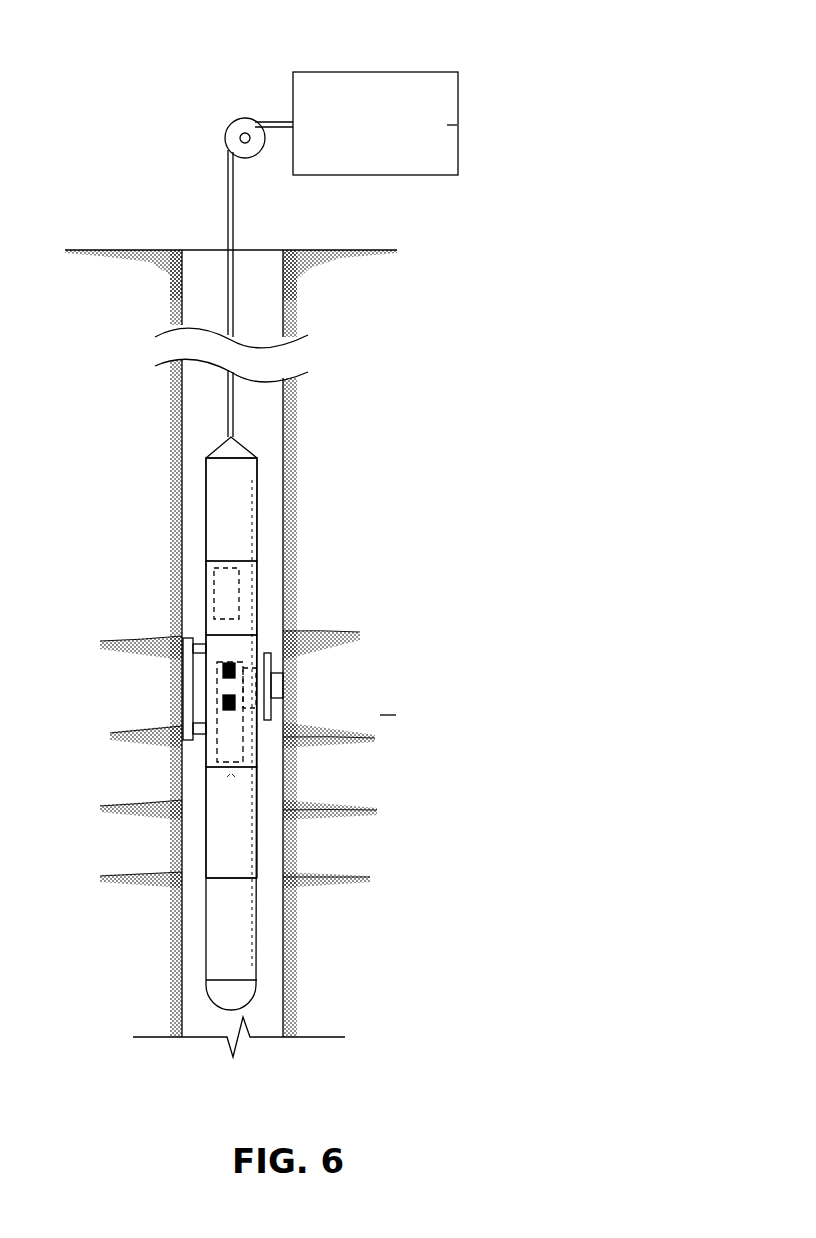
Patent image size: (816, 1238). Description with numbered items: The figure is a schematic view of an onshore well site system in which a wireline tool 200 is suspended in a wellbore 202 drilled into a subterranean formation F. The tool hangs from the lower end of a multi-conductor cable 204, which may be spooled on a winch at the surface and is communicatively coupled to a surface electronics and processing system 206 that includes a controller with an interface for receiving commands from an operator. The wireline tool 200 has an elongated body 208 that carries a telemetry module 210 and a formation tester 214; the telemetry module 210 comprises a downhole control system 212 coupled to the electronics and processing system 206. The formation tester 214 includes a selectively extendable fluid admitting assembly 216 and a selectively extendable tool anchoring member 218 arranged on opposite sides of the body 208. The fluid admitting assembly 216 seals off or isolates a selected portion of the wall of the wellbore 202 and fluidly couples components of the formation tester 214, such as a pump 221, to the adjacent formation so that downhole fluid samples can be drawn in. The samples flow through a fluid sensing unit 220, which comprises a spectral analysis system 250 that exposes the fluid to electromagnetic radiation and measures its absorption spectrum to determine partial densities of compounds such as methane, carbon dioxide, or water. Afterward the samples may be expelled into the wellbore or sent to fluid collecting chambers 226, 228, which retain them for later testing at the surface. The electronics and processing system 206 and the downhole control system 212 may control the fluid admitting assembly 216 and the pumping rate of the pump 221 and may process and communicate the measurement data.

The wireline tool 200 is at (378, 603).
The wellbore 202 is at (283, 441).
The multi-conductor cable 204 is at (228, 275).
The electronics and processing system 206 is at (438, 72).
The elongated body 208 is at (228, 497).
The telemetry module 210 is at (252, 612).
The downhole control system 212 is at (228, 590).
The formation tester 214 is at (222, 640).
The fluid admitting assembly 216 is at (272, 663).
The tool anchoring member 218 is at (183, 725).
The fluid sensing unit 220 is at (217, 681).
The pump 221 is at (217, 745).
The fluid collecting chamber 226 is at (226, 815).
The fluid collecting chamber 228 is at (226, 915).
The spectral analysis system 250 is at (232, 705).